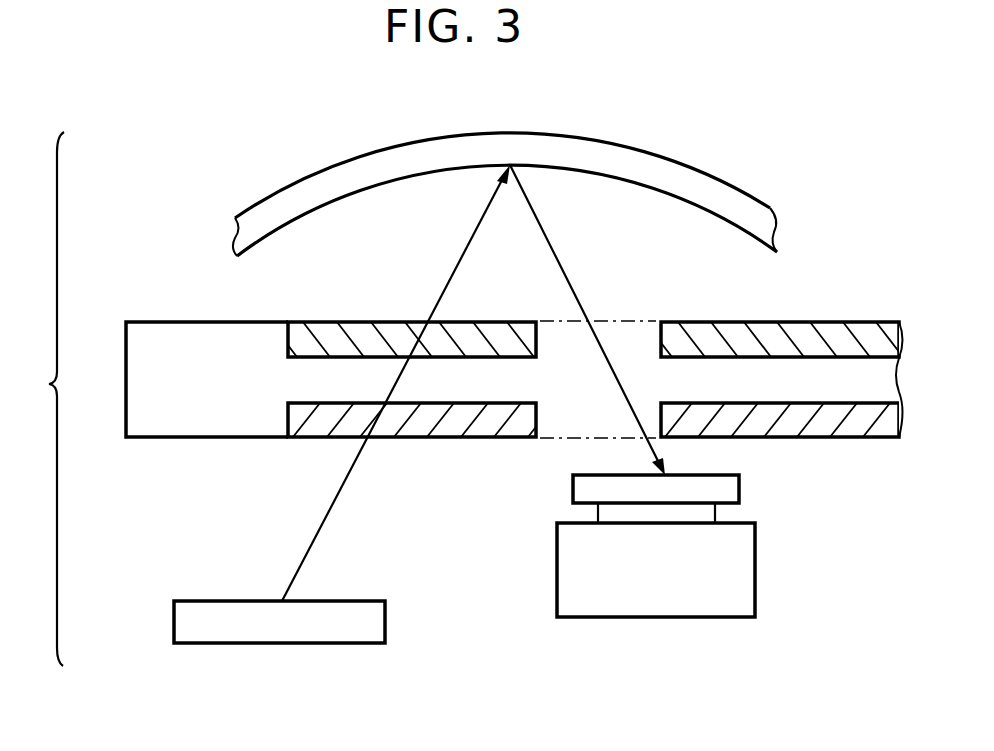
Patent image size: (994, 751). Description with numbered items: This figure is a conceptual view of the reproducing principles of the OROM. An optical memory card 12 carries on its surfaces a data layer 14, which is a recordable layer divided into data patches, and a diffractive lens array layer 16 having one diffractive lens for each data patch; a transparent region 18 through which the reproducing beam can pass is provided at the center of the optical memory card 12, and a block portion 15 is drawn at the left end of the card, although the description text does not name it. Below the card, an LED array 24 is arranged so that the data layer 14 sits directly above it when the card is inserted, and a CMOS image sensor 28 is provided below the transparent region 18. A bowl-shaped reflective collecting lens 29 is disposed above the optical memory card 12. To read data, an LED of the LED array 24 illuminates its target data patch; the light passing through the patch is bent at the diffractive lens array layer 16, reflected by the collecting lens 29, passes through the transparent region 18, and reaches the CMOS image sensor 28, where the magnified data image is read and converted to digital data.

The optical memory card 12 is at (167, 305).
The data layer 14 is at (456, 428).
The mounting block 15 is at (182, 403).
The diffractive lens array layer 16 is at (400, 337).
The transparent region 18 is at (632, 337).
The LED array 24 is at (242, 626).
The CMOS image sensor 28 is at (698, 595).
The bowl-shaped reflective collecting lens 29 is at (713, 192).